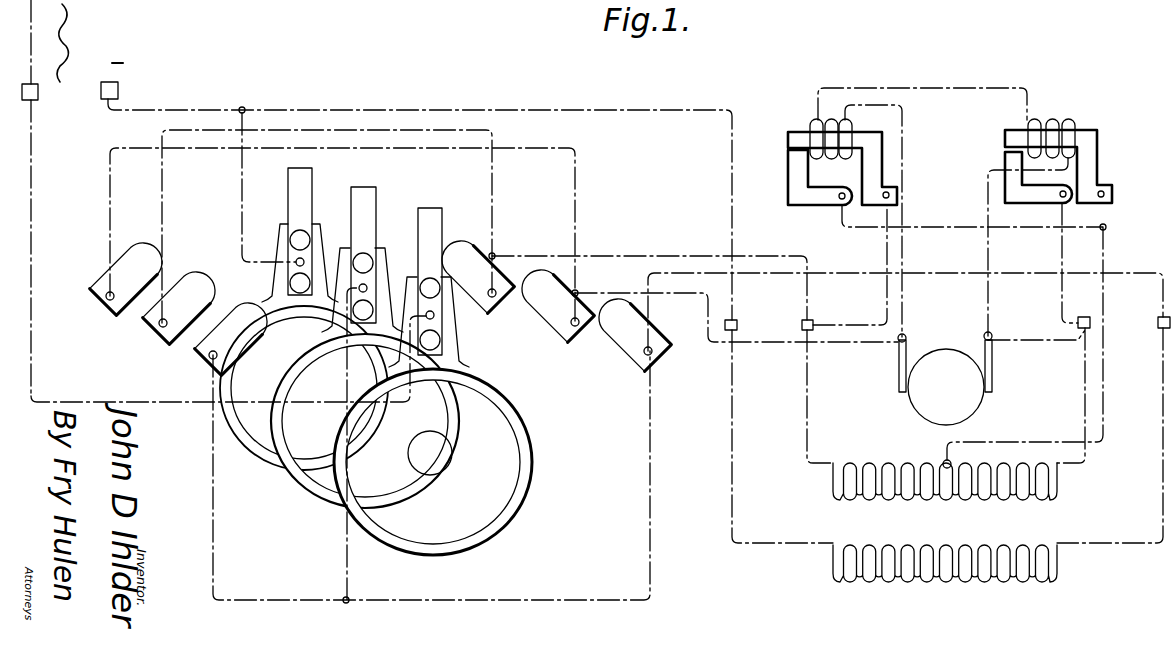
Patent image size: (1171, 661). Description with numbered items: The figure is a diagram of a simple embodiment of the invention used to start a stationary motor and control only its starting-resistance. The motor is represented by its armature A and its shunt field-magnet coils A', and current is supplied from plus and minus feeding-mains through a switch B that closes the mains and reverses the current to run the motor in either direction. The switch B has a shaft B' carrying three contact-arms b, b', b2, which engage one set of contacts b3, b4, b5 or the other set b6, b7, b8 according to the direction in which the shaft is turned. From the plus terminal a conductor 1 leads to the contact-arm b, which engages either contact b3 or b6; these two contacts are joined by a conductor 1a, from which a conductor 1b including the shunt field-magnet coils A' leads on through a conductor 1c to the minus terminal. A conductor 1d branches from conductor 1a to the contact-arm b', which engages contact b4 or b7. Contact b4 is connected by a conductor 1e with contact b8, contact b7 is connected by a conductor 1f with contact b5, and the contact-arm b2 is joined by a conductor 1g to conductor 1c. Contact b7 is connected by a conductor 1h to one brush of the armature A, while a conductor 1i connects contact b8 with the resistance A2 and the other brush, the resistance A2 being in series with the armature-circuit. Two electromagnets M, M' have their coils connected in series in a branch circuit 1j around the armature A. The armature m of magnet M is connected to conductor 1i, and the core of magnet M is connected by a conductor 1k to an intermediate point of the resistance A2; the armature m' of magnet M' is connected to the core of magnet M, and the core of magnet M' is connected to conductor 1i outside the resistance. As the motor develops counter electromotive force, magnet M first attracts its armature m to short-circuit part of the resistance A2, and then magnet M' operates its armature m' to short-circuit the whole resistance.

The conductor 1 is at (37, 198).
The conductor 1a is at (431, 456).
The conductor 1b is at (909, 396).
The conductor 1c is at (467, 303).
The conductor 1d is at (228, 359).
The conductor 1e is at (338, 226).
The conductor 1f is at (352, 235).
The conductor 1g is at (269, 187).
The conductor 1h is at (823, 274).
The conductor 1i is at (791, 333).
The branch circuit 1j is at (943, 206).
The conductor 1k is at (983, 336).
The switch B is at (376, 314).
The shaft B' is at (430, 453).
The contact-arm b is at (430, 281).
The contact-arm b' is at (363, 255).
The contact-arm b2 is at (300, 231).
The contact b3 is at (231, 339).
The contact b4 is at (179, 308).
The contact b5 is at (126, 279).
The contact b6 is at (635, 335).
The contact b7 is at (558, 306).
The contact b8 is at (478, 277).
The electromagnet M is at (1058, 147).
The electromagnet M' is at (834, 152).
The armature of magnet M m is at (1038, 177).
The armature of magnet M' m' is at (820, 177).
The armature A is at (945, 382).
The shunt field-magnet coils A' is at (945, 577).
The resistance A2 is at (945, 495).